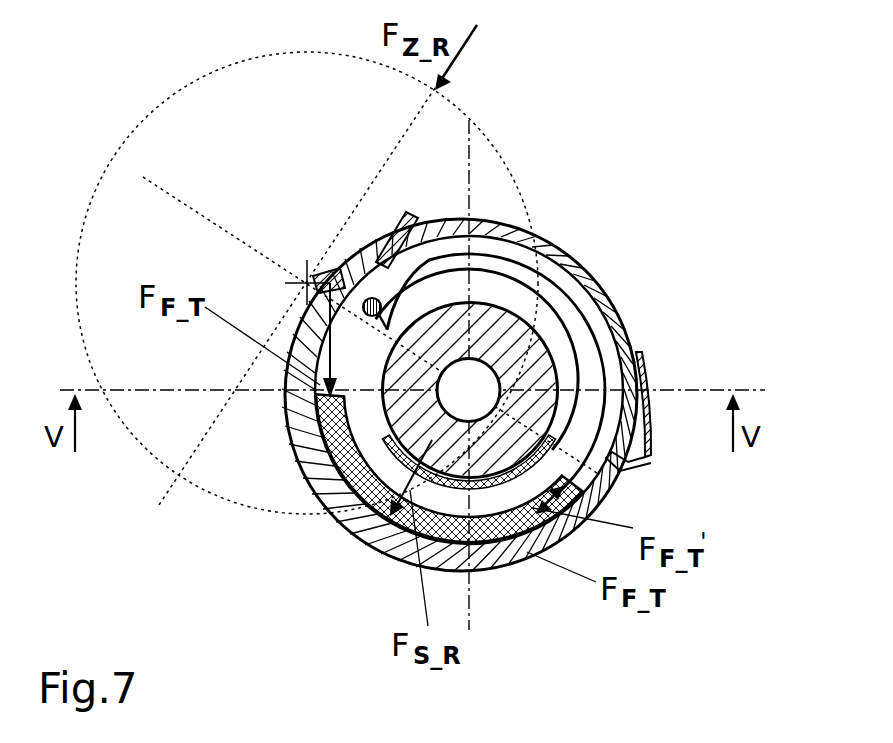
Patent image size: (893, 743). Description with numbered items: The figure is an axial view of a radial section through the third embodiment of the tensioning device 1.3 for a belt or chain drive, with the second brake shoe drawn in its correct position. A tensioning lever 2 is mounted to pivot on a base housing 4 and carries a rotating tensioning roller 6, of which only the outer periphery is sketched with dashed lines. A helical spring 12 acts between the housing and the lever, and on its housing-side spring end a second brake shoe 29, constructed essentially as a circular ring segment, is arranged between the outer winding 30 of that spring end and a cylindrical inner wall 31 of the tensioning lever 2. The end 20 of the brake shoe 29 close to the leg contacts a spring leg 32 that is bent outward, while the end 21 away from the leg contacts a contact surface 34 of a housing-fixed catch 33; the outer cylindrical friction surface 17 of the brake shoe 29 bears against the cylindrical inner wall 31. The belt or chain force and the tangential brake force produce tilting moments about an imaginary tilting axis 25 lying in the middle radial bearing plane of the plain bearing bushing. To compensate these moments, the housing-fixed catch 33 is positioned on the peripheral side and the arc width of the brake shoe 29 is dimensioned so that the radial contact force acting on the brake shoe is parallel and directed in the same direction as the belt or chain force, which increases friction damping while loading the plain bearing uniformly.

The tensioning device 1.3 is at (649, 137).
The tensioning lever 2 is at (396, 560).
The base housing 4 is at (574, 263).
The tensioning roller 6 is at (137, 128).
The helical spring 12 is at (468, 546).
The outer cylindrical friction surface 17 is at (340, 458).
The end of the brake shoe close to the leg 20 is at (330, 455).
The end of the brake shoe away from the leg 21 is at (487, 530).
The tilting axis 25 is at (197, 212).
The second brake shoe 29 is at (406, 529).
The outer winding 30 is at (450, 506).
The cylindrical inner wall 31 is at (396, 549).
The spring leg 32 is at (318, 418).
The housing-fixed catch 33 is at (572, 482).
The contact surface 34 is at (616, 467).